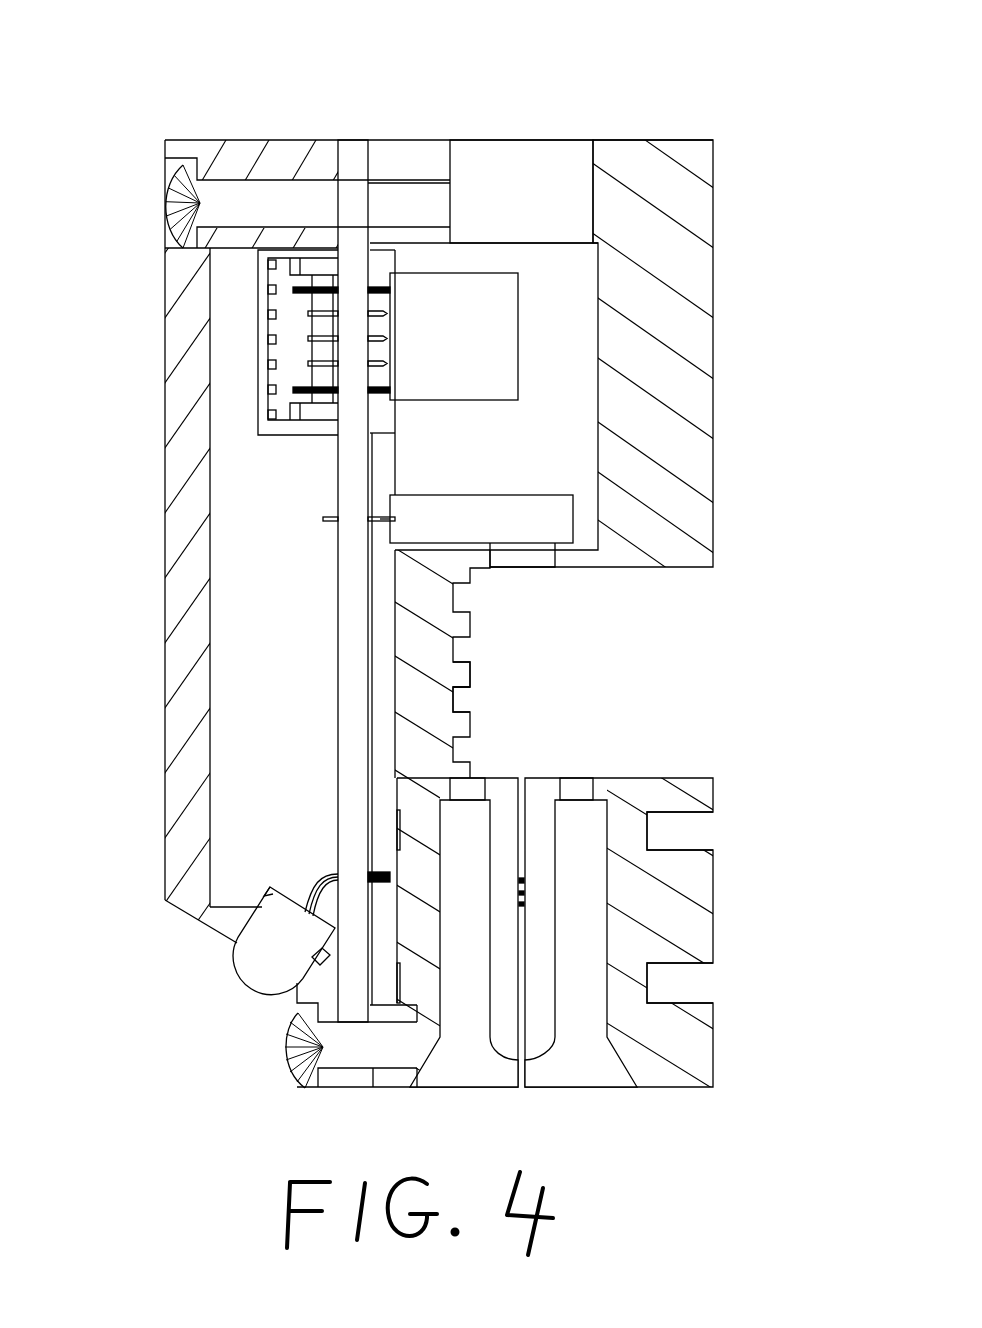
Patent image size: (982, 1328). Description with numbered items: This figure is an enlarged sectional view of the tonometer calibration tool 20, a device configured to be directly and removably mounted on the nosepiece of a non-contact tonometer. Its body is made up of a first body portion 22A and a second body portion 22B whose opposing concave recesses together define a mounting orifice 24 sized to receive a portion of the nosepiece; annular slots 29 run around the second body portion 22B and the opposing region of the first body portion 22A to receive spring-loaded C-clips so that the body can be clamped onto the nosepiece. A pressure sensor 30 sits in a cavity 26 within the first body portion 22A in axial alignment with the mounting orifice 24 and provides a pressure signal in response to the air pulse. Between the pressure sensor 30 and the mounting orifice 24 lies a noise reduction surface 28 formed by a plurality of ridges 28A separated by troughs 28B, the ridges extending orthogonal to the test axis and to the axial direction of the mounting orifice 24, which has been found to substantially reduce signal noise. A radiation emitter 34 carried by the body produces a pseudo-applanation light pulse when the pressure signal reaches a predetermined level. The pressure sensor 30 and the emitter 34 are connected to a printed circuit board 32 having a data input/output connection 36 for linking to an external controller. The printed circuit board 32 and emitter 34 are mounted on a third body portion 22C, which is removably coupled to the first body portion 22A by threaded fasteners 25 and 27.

The tonometer calibration tool 20 is at (588, 95).
The first body portion 22A is at (715, 325).
The second body portion 22B is at (713, 895).
The third body portion 22C is at (165, 500).
The mounting orifice 24 is at (537, 817).
The threaded fastener 25 is at (183, 182).
The cavity 26 is at (598, 462).
The threaded fastener 27 is at (305, 1072).
The noise reduction surface 28 is at (497, 642).
The ridge 28A is at (472, 673).
The trough 28B is at (455, 702).
The annular slot 29 is at (688, 813).
The pressure sensor 30 is at (517, 563).
The printed circuit board 32 is at (338, 620).
The radiation emitter 34 is at (250, 985).
The data input/output connection 36 is at (312, 333).